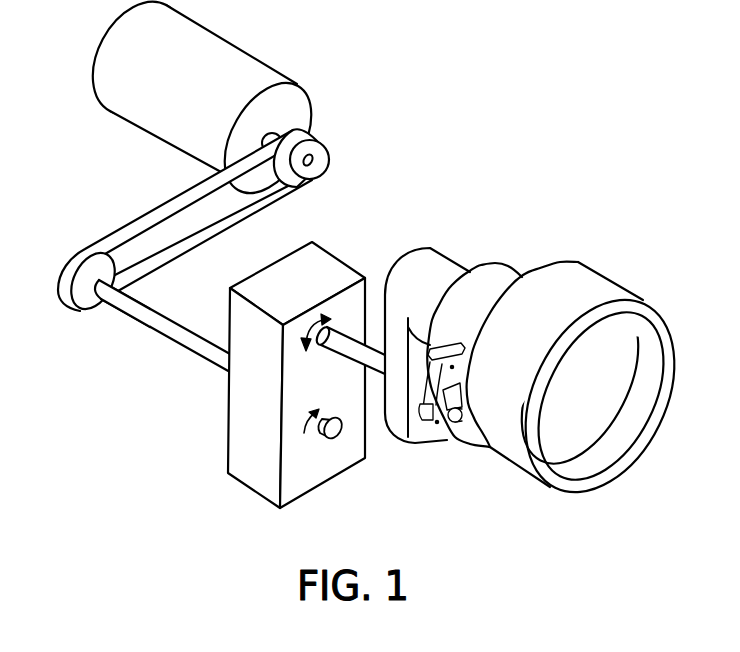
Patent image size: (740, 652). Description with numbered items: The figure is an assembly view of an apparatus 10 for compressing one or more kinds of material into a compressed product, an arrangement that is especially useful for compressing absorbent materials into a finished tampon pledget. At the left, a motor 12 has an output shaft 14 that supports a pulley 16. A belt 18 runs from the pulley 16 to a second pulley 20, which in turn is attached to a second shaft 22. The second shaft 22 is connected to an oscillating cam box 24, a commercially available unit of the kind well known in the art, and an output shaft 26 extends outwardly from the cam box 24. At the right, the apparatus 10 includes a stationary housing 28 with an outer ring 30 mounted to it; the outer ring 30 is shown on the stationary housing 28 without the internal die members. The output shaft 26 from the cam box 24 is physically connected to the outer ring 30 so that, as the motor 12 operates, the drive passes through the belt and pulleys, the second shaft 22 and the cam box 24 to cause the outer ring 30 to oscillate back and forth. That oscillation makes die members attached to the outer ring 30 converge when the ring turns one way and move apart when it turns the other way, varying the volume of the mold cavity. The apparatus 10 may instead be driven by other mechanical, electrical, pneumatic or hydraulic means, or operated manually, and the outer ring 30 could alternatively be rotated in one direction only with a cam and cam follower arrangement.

The apparatus 10 is at (565, 218).
The motor 12 is at (224, 56).
The output shaft 14 is at (273, 131).
The pulley 16 is at (323, 147).
The belt 18 is at (148, 212).
The second pulley 20 is at (87, 306).
The second shaft 22 is at (183, 342).
The oscillating cam box 24 is at (325, 263).
The output shaft 26 is at (352, 354).
The stationary housing 28 is at (448, 265).
The outer ring 30 is at (603, 285).